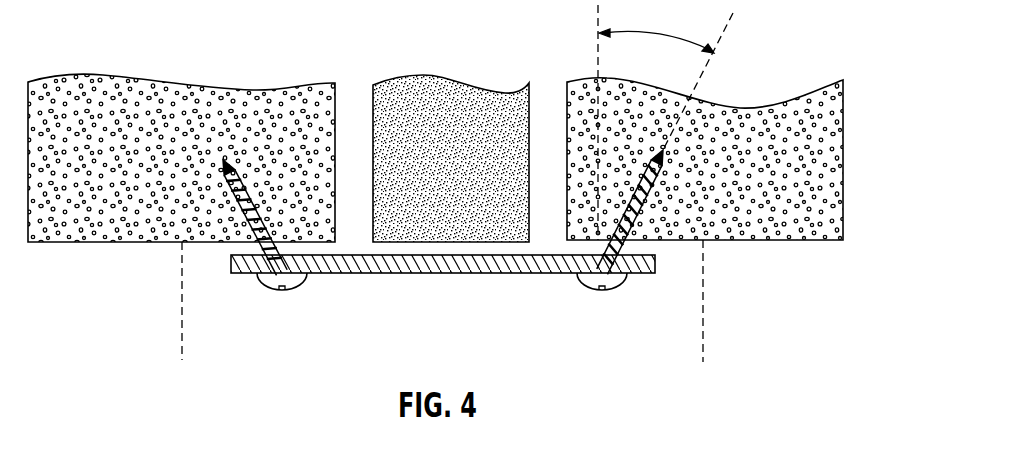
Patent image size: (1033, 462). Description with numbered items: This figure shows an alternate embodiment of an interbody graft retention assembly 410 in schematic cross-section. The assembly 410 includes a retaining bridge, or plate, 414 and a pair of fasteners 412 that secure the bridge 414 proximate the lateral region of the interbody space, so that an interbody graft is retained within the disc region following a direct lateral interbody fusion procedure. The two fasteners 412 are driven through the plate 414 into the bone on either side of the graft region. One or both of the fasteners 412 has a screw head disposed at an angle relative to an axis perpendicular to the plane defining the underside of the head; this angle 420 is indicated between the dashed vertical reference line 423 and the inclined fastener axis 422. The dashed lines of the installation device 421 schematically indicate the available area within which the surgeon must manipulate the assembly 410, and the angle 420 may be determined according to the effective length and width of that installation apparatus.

The interbody graft retention assembly 410 is at (448, 251).
The fasteners 412 is at (234, 205).
The retaining bridge (plate) 414 is at (545, 273).
The angle 420 is at (652, 30).
The installation device 421 is at (180, 308).
The fastener axis 422 is at (731, 22).
The vertical reference axis 423 is at (597, 32).